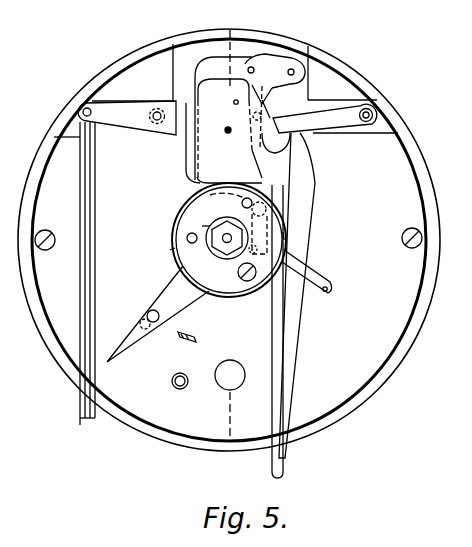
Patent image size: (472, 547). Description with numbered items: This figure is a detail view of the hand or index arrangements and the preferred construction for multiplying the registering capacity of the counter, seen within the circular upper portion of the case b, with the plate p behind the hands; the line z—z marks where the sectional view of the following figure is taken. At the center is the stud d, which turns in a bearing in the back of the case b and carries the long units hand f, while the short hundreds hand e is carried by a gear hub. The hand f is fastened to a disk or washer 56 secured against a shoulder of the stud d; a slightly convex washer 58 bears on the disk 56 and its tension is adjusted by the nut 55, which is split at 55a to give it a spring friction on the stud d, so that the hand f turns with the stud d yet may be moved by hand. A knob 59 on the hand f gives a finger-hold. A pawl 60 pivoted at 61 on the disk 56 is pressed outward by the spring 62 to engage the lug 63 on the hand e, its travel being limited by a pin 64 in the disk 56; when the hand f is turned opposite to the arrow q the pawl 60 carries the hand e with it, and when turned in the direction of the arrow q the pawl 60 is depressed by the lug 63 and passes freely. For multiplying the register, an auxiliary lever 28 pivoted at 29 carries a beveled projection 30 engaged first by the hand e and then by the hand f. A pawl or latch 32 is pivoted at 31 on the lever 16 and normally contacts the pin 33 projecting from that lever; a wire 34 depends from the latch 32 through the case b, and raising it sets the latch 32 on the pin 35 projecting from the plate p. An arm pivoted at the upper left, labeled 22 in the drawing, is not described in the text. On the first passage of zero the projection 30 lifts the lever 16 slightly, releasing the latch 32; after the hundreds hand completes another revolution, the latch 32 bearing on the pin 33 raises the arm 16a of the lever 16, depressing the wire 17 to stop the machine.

The lever 16 is at (216, 62).
The arm of the lever 16a is at (246, 62).
The wire 17 is at (92, 300).
The arm 22 is at (157, 111).
The auxiliary lever 28 is at (230, 128).
The pivot 29 is at (366, 125).
The beveled projection 30 is at (227, 132).
The pivot 31 is at (302, 83).
The pawl or latch 32 is at (271, 83).
The pin 33 is at (233, 102).
The wire 34 is at (284, 393).
The pin 35 is at (258, 120).
The nut 55 is at (226, 234).
The split in the nut 55a is at (232, 246).
The disk or washer 56 is at (170, 250).
The washer 58 is at (202, 226).
The knob 59 is at (149, 317).
The pawl 60 is at (284, 236).
The pivot 61 is at (265, 212).
The spring 62 is at (272, 226).
The lug 63 is at (311, 281).
The pin 64 is at (266, 251).
The case b is at (436, 262).
The plate p is at (228, 217).
The section line z is at (227, 242).
The stud d is at (219, 243).
The short hand e is at (297, 271).
The long hand f is at (158, 314).
The arrow q is at (222, 352).